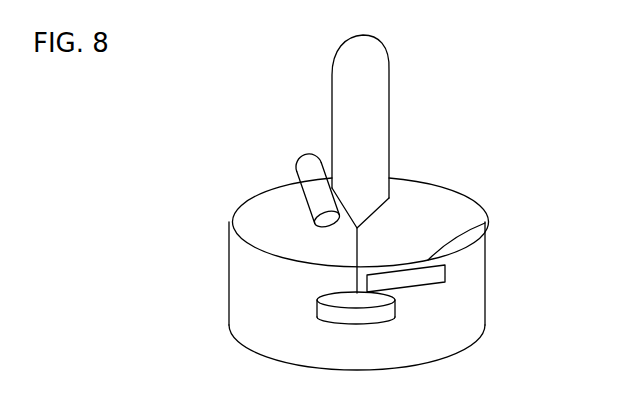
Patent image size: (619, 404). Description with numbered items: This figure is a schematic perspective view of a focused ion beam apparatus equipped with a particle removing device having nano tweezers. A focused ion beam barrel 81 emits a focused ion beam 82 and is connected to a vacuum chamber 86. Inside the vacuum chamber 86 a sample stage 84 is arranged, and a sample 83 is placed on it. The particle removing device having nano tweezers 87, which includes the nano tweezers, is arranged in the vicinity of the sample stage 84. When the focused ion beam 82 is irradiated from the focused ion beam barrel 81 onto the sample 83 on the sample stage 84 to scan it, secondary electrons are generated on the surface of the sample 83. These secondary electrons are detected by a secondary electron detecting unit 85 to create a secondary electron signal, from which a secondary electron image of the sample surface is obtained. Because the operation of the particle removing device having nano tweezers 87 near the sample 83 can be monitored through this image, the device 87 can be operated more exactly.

The focused ion beam barrel 81 is at (390, 107).
The focused ion beam 82 is at (358, 250).
The sample 83 is at (352, 293).
The sample stage 84 is at (385, 315).
The secondary electron detecting unit 85 is at (306, 158).
The vacuum chamber 86 is at (470, 197).
The particle removing device having nano tweezers 87 is at (483, 223).